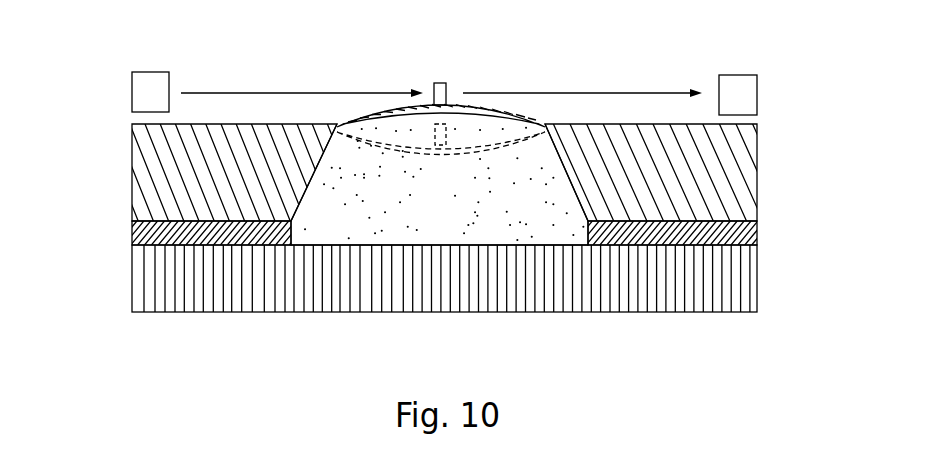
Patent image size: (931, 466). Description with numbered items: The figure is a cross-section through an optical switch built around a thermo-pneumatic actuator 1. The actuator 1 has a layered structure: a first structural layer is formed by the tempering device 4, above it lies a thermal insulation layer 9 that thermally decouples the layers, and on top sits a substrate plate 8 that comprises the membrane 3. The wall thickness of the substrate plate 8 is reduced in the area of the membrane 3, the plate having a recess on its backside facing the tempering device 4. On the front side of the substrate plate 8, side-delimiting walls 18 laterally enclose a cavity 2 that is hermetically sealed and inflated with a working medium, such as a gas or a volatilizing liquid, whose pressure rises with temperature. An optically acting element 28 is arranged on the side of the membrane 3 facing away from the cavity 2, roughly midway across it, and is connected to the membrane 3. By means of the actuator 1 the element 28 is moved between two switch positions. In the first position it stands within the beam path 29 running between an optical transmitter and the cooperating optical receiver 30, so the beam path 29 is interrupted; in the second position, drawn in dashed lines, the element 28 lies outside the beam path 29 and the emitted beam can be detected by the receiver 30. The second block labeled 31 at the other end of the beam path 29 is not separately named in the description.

The thermo-pneumatic actuator 1 is at (620, 340).
The cavity 2 is at (454, 211).
The membrane 3 is at (497, 112).
The tempering device 4 is at (757, 293).
The substrate plate 8 is at (137, 173).
The thermal insulation layer 9 is at (442, 234).
The side-delimiting walls 18 is at (132, 234).
The optically acting element 28 is at (440, 83).
The beam path 29 is at (303, 93).
The optical receiver 30 is at (150, 80).
The second stop element 31 is at (735, 85).